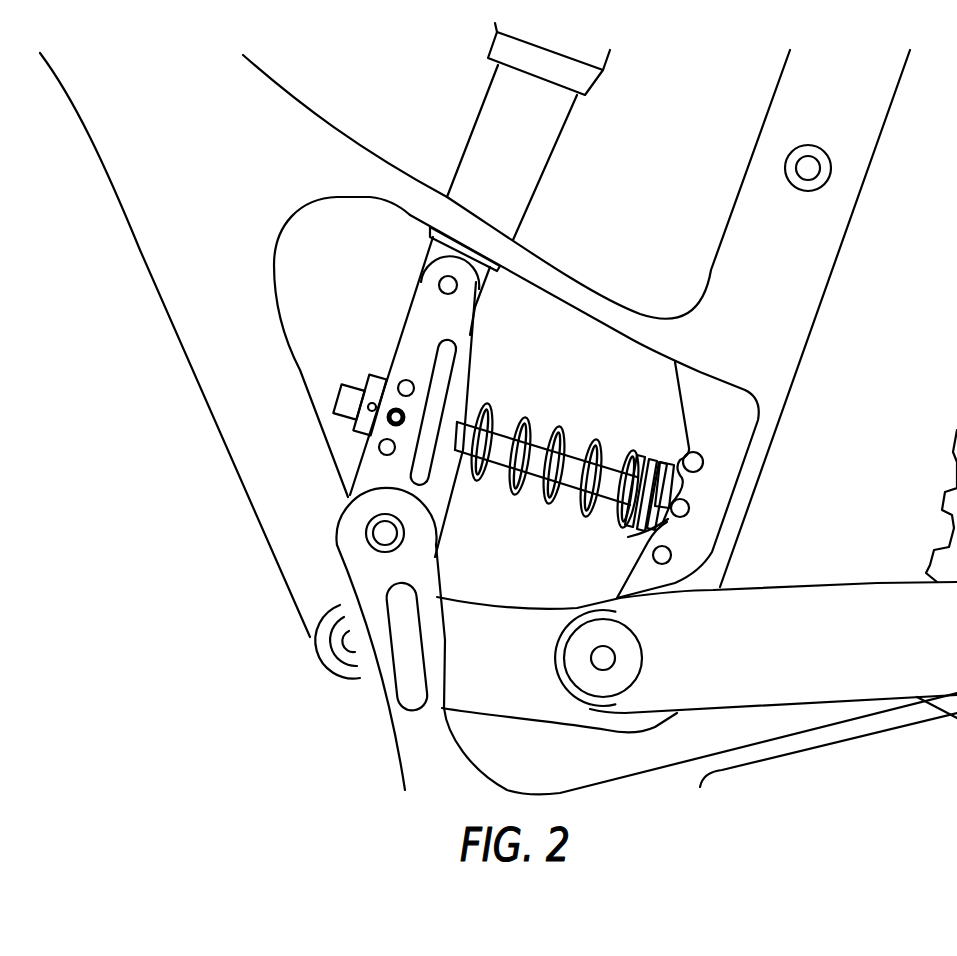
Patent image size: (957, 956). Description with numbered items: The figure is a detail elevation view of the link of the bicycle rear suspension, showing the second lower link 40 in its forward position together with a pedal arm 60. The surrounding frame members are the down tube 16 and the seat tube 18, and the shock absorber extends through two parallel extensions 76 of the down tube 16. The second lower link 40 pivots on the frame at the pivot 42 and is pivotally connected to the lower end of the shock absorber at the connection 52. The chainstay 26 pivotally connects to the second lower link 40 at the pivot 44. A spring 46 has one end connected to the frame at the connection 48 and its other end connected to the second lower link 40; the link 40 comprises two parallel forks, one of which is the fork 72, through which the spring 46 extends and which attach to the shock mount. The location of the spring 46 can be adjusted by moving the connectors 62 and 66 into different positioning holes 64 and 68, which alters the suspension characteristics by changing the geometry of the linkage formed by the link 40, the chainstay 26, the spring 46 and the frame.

The down tube 16 is at (164, 302).
The seat tube 18 is at (837, 253).
The chainstay 26 is at (385, 752).
The second lower link 40 is at (424, 314).
The pivot on frame 42 is at (322, 640).
The chainstay pivot connection 44 is at (378, 533).
The spring 46 is at (547, 494).
The spring frame connection 48 is at (650, 555).
The shock absorber pivot connection 52 is at (438, 282).
The pedal arm 60 is at (819, 584).
The connector 62 is at (372, 388).
The positioning holes 64 is at (405, 378).
The connector 66 is at (667, 521).
The positioning holes 68 is at (683, 462).
The parallel fork 72 is at (460, 330).
The parallel extensions of down tube 76 is at (537, 267).